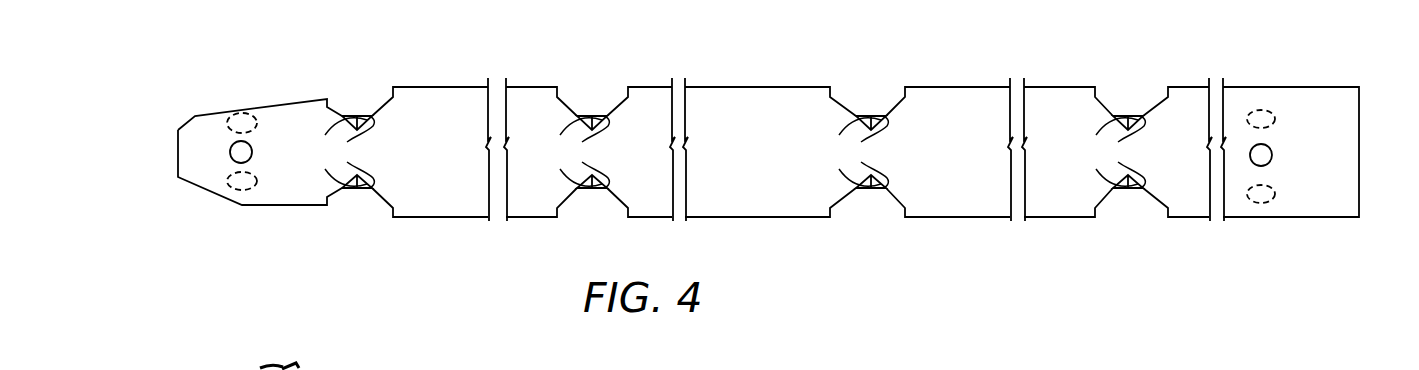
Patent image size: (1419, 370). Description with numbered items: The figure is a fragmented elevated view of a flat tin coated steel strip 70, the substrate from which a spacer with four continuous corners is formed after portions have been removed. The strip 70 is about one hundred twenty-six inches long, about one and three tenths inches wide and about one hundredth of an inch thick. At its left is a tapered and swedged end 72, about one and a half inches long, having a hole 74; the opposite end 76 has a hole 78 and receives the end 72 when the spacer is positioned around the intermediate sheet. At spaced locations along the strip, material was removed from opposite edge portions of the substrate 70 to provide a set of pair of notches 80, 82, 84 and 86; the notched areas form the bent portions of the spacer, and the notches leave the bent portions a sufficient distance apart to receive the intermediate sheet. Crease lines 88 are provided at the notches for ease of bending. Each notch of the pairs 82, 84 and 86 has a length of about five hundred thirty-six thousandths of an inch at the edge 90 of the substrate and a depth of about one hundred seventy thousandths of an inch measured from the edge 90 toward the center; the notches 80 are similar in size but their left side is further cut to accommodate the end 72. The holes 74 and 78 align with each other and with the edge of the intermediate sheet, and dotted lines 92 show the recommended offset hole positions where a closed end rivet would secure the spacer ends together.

The flat tin coated steel strip 70 is at (762, 169).
The tapered and swedged end 72 is at (233, 178).
The hole 74 is at (232, 149).
The opposite end 76 is at (1311, 177).
The hole 78 is at (1268, 148).
The set of pair of notches 80 is at (360, 111).
The set of pair of notches 82 is at (595, 111).
The set of pair of notches 84 is at (872, 112).
The set of pair of notches 86 is at (1130, 110).
The crease lines 88 is at (727, 152).
The edge of the substrate 90 is at (758, 87).
The dotted lines 92 is at (245, 113).